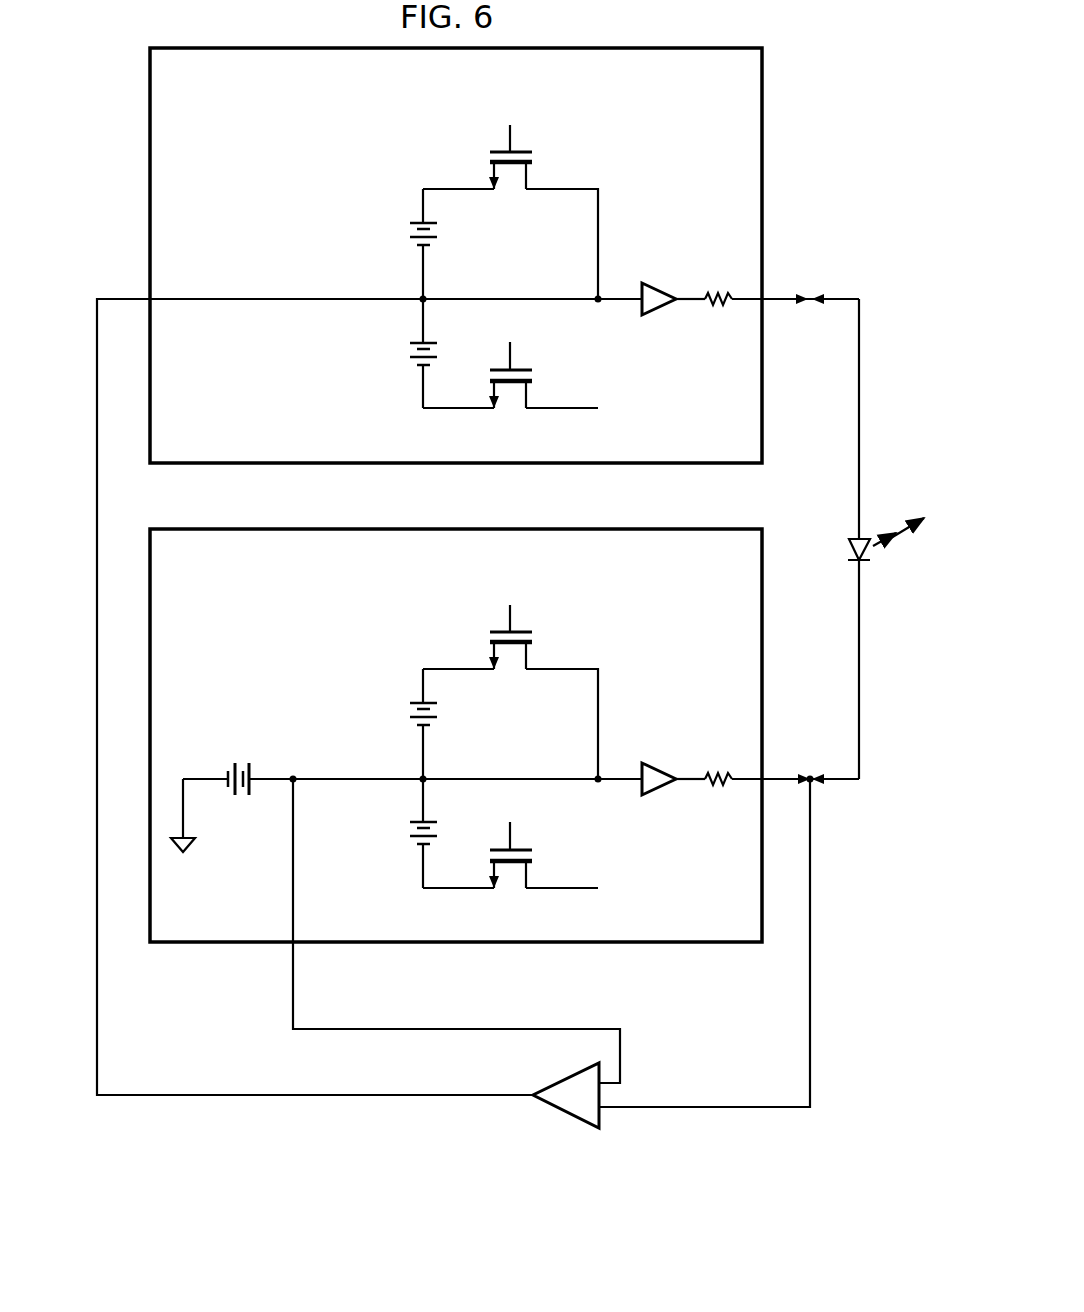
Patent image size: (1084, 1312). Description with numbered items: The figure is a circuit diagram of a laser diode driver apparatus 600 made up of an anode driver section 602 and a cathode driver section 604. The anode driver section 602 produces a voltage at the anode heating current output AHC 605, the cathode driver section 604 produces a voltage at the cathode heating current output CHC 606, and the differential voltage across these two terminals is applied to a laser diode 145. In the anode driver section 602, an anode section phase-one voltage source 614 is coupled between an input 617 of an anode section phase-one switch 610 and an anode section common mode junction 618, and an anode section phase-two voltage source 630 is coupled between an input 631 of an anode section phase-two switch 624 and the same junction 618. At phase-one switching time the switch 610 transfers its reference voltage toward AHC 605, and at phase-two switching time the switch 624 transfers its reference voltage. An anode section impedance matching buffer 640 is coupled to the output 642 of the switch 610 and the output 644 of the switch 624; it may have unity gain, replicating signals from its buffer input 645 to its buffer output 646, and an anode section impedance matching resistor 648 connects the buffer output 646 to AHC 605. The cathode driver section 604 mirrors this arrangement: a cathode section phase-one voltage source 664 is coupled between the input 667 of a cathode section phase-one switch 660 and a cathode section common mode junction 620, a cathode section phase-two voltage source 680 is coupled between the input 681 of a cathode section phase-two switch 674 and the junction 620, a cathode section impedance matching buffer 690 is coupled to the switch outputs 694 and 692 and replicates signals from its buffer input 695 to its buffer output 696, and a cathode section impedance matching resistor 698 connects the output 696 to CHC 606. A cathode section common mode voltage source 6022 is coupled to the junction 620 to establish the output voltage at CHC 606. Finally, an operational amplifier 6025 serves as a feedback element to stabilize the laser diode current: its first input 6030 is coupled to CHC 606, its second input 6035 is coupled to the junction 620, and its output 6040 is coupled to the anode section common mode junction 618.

The laser diode driver apparatus 600 is at (833, 148).
The anode driver section 602 is at (150, 92).
The cathode driver section 604 is at (222, 944).
The anode heating current output 605 is at (815, 308).
The cathode heating current output 606 is at (777, 779).
The anode section Φ1 switch 610 is at (556, 154).
The anode section Φ1 voltage source 614 is at (450, 232).
The input of the anode section Φ1 switch 617 is at (447, 189).
The anode section common mode junction 618 is at (430, 299).
The cathode section common mode junction 620 is at (430, 779).
The anode section Φ2 switch 624 is at (535, 356).
The anode section Φ2 voltage source 630 is at (397, 377).
The input of the anode section Φ2 switch 631 is at (445, 410).
The anode section impedance matching buffer 640 is at (660, 313).
The output of the anode section Φ1 switch 642 is at (595, 189).
The output of the anode section Φ2 switch 644 is at (575, 410).
The anode buffer input 645 is at (618, 299).
The anode buffer output 646 is at (690, 299).
The anode section impedance matching resistor 648 is at (716, 304).
The cathode section Φ1 switch 660 is at (535, 836).
The cathode section Φ1 voltage source 664 is at (397, 857).
The input of the cathode section Φ1 switch 667 is at (445, 890).
The cathode section Φ2 switch 674 is at (556, 634).
The cathode section Φ2 voltage source 680 is at (450, 712).
The input of the cathode section Φ2 switch 681 is at (447, 669).
The cathode section impedance matching buffer 690 is at (660, 793).
The output of the cathode section Φ2 switch 692 is at (595, 669).
The output of the cathode section Φ1 switch 694 is at (575, 890).
The cathode buffer input 695 is at (618, 779).
The cathode buffer output 696 is at (690, 779).
The cathode section impedance matching resistor 698 is at (716, 784).
The laser diode 145 is at (849, 553).
The cathode section common mode voltage source 6022 is at (239, 815).
The operational amplifier 6025 is at (558, 1110).
The first input of the op-amp 6030 is at (603, 1110).
The second input of the op-amp 6035 is at (622, 1058).
The output of the op-amp 6040 is at (315, 726).